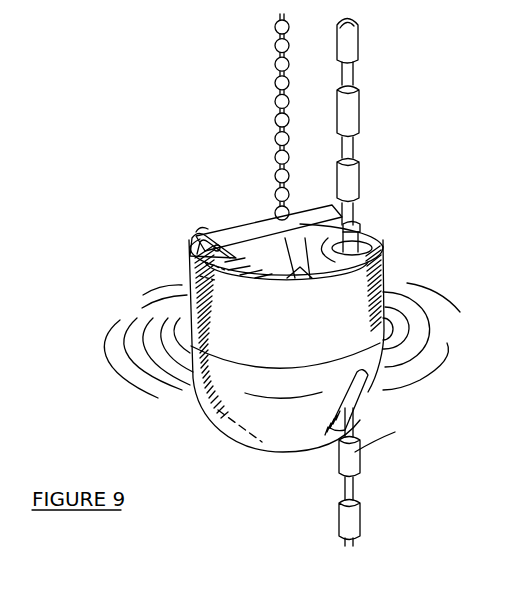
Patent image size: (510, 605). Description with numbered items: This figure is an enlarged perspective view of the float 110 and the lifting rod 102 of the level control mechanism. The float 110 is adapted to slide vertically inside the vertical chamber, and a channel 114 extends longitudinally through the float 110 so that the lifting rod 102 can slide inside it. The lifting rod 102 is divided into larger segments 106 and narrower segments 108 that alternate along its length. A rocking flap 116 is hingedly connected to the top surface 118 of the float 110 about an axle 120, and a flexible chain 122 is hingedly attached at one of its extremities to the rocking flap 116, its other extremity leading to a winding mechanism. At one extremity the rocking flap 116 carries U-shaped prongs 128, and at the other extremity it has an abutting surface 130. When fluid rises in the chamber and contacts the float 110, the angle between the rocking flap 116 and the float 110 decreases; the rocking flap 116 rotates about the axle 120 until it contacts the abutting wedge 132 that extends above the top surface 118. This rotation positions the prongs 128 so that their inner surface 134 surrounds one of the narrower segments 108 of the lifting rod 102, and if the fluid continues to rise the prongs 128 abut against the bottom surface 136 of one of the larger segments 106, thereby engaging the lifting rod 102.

The lifting rod 102 is at (369, 44).
The larger segments 106 is at (354, 101).
The narrower segments 108 is at (360, 143).
The float 110 is at (292, 333).
The channel 114 is at (328, 438).
The rocking flap 116 is at (258, 222).
The top surface 118 is at (268, 272).
The axle 120 is at (200, 237).
The flexible chain 122 is at (281, 62).
The U-shaped prongs 128 is at (341, 208).
The abutting surface 130 is at (205, 270).
The abutting wedge 132 is at (305, 272).
The inner surface 134 is at (360, 228).
The bottom surface 136 is at (364, 251).